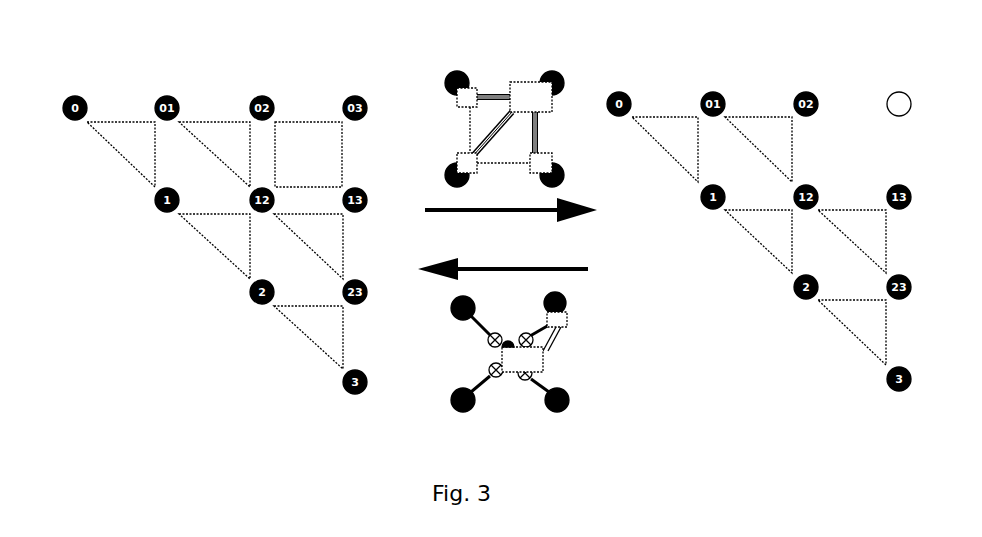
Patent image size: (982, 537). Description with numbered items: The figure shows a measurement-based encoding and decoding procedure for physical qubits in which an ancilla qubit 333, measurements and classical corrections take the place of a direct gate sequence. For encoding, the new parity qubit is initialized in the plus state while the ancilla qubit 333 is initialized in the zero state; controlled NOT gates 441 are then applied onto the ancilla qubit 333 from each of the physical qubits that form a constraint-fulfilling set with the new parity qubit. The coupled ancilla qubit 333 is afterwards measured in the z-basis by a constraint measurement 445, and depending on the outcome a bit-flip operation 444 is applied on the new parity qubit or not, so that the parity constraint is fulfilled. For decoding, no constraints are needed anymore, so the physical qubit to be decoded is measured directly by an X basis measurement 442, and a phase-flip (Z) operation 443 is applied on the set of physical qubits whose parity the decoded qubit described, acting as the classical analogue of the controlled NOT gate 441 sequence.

The ancilla qubit 333 is at (509, 342).
The controlled NOT gate 441 is at (479, 332).
The X basis measurement 442 is at (490, 102).
The phase-flip (Z) operation 443 is at (456, 146).
The bit-flip operation 444 is at (568, 317).
The constraint measurement 445 is at (531, 361).